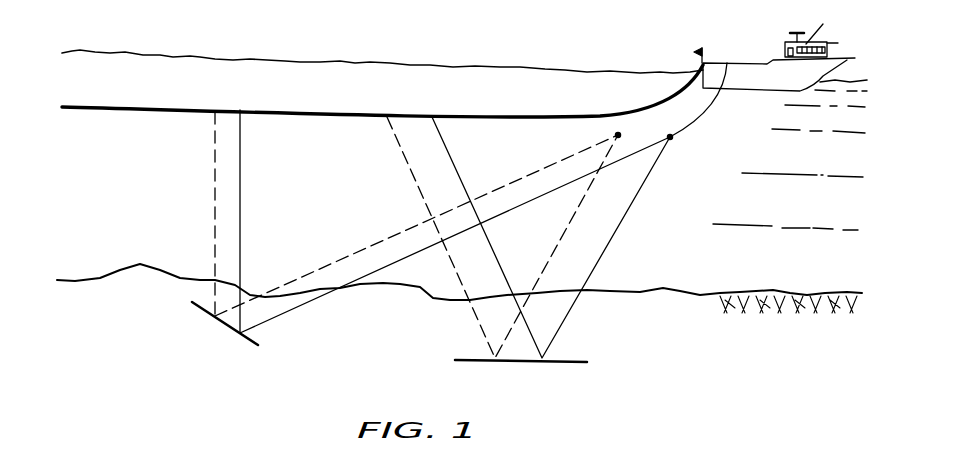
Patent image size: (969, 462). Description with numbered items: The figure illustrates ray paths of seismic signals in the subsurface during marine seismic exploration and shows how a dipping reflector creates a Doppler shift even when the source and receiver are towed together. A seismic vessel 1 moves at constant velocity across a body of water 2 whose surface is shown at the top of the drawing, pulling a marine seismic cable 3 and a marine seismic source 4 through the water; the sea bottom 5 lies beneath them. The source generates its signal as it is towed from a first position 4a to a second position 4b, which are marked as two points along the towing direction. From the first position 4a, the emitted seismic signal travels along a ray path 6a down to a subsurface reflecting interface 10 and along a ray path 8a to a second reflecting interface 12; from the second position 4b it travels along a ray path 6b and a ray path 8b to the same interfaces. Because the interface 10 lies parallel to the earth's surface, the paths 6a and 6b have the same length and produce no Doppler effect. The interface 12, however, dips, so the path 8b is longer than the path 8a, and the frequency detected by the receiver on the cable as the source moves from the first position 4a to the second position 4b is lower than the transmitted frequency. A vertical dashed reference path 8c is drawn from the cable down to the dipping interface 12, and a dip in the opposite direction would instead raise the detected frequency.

The seismic vessel 1 is at (765, 63).
The body of water 2 is at (143, 53).
The marine seismic cable 3 is at (120, 108).
The marine seismic source 4 is at (672, 133).
The first position 4a is at (618, 132).
The second position 4b is at (673, 139).
The sea bottom 5 is at (103, 280).
The ray path 6a is at (580, 217).
The ray path 6b is at (497, 251).
The ray path 8a is at (365, 247).
The ray path 8b is at (242, 169).
The vertical ray path 8c is at (215, 195).
The subsurface reflecting interface 10 is at (480, 362).
The reflecting interface 12 is at (197, 308).